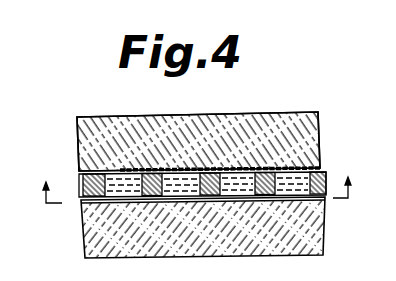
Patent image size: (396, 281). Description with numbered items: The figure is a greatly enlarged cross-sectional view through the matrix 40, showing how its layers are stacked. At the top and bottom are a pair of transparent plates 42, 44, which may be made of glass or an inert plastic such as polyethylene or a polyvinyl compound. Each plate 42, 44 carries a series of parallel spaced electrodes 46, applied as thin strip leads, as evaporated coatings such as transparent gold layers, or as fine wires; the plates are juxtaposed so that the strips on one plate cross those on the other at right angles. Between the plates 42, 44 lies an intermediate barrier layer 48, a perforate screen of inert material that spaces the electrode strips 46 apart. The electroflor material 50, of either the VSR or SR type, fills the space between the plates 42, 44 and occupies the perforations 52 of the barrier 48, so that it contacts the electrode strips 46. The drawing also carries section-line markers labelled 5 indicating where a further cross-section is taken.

The matrix 40 is at (301, 110).
The transparent plate 42 is at (308, 222).
The transparent plate 44 is at (258, 124).
The electrodes 46 is at (243, 168).
The intermediate barrier layer 48 is at (82, 174).
The electroflor material 50 is at (115, 167).
The perforations 52 is at (280, 190).
The section line 5- 5 is at (195, 190).